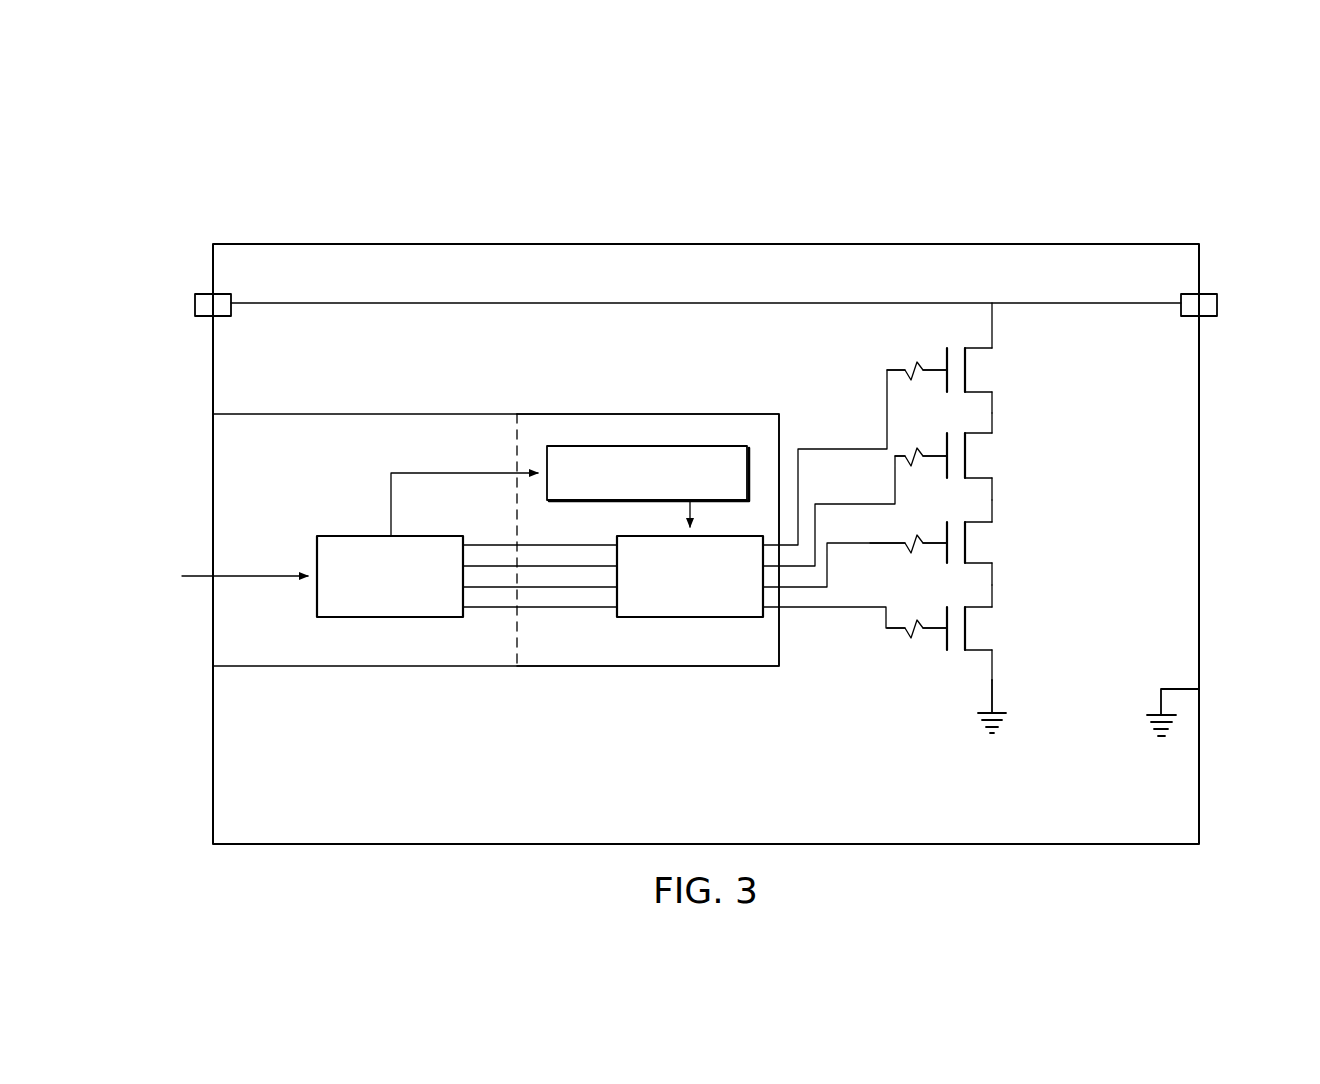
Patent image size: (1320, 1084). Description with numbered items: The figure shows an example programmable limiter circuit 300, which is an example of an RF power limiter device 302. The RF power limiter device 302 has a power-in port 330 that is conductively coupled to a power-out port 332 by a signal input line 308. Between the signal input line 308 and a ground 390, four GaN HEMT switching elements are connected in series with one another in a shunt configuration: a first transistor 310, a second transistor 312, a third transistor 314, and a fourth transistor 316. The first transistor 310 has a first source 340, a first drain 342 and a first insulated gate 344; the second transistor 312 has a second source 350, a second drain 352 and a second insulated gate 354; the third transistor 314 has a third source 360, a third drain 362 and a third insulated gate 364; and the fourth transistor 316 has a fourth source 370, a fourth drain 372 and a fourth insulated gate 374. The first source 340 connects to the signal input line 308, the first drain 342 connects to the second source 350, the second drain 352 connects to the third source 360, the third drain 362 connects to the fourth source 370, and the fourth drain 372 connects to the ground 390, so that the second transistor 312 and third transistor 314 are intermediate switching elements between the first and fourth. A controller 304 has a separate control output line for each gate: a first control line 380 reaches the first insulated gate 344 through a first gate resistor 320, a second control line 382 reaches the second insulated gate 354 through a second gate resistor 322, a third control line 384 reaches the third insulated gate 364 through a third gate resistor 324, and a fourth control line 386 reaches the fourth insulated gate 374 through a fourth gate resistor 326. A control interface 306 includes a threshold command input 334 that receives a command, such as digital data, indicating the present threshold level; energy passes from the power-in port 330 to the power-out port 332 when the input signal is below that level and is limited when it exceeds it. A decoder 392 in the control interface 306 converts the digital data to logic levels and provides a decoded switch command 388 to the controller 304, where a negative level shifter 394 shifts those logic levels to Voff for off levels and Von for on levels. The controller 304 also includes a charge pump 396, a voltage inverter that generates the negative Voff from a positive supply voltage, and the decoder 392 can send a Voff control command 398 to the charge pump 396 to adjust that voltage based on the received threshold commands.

The programmable limiter circuit 300 is at (1068, 185).
The RF power limiter device 302 is at (813, 244).
The controller 304 is at (711, 666).
The control interface 306 is at (366, 666).
The signal input line 308 is at (805, 303).
The first transistor 310 is at (970, 374).
The second transistor 312 is at (970, 459).
The third transistor 314 is at (970, 545).
The fourth transistor 316 is at (970, 632).
The first gate resistor 320 is at (905, 370).
The second gate resistor 322 is at (905, 456).
The third gate resistor 324 is at (905, 543).
The fourth gate resistor 326 is at (911, 628).
The power-in port 330 is at (198, 294).
The power-out port 332 is at (1213, 294).
The threshold command input 334 is at (194, 576).
The first source 340 is at (994, 347).
The first drain 342 is at (994, 394).
The first insulated gate 344 is at (932, 369).
The second source 350 is at (994, 432).
The second drain 352 is at (994, 479).
The second insulated gate 354 is at (932, 455).
The third source 360 is at (994, 520).
The third drain 362 is at (994, 565).
The third insulated gate 364 is at (932, 542).
The fourth source 370 is at (994, 605).
The fourth drain 372 is at (994, 669).
The fourth insulated gate 374 is at (930, 629).
The first control line 380 is at (818, 449).
The second control line 382 is at (852, 504).
The third control line 384 is at (855, 543).
The fourth control line 386 is at (832, 607).
The decoded switch command 388 is at (558, 626).
The ground 390 is at (994, 695).
The decoder 392 is at (324, 536).
The negative level shifter 394 is at (660, 617).
The charge pump 396 is at (650, 446).
The Voff control command 398 is at (420, 473).